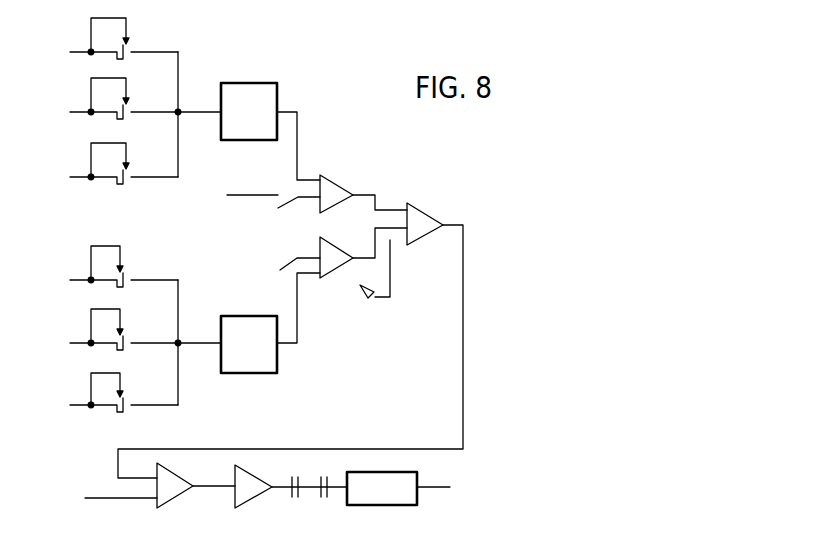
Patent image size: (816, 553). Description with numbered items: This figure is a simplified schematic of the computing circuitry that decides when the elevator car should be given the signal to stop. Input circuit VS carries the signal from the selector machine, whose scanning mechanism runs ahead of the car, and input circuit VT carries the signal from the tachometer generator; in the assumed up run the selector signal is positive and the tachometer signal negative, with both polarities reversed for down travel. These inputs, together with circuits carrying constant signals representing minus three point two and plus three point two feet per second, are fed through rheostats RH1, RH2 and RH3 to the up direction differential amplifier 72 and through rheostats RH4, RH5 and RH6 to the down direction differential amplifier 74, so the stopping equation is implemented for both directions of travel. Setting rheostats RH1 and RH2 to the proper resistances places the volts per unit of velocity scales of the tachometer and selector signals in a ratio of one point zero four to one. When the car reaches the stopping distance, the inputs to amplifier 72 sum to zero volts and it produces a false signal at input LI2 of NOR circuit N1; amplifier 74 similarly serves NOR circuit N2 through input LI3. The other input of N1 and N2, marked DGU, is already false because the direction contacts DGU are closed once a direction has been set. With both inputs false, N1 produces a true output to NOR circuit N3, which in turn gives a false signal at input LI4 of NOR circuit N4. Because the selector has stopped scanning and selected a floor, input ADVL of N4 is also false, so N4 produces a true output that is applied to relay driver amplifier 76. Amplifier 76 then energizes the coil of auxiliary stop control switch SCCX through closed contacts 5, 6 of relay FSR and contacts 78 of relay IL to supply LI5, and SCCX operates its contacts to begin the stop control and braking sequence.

The rheostat RH1 is at (132, 49).
The rheostat RH2 is at (130, 107).
The relay contact RH3 is at (130, 171).
The relay contact RH4 is at (127, 277).
The relay contact RH5 is at (128, 339).
The relay contact RH6 is at (128, 400).
The input circuit VS is at (75, 280).
The input circuit VT is at (77, 343).
The up direction differential amplifier 72 is at (254, 83).
The down direction differential amplifier 74 is at (253, 373).
The relay driver amplifier 76 is at (251, 500).
The input L12 of NOR circuit N1 LI2 is at (311, 180).
The line LI3 is at (312, 274).
The input L14 of NOR circuit N4 LI4 is at (137, 466).
The supply L15 LI5 is at (437, 487).
The input DGU is at (273, 243).
The NOR circuit N1 is at (341, 196).
The NOR circuit N2 is at (331, 259).
The NOR circuit N3 is at (416, 226).
The NOR circuit N4 is at (170, 488).
The auxiliary stop control switch SCCX is at (386, 373).
The input ADVL is at (127, 498).
The relay FSR is at (304, 473).
The contacts 7-8 of relay 1L 78 is at (327, 473).
The contact 5 of relay FSR 5 is at (283, 508).
The contact 6 of relay FSR 6 is at (305, 508).
The relay 1L IL is at (328, 478).